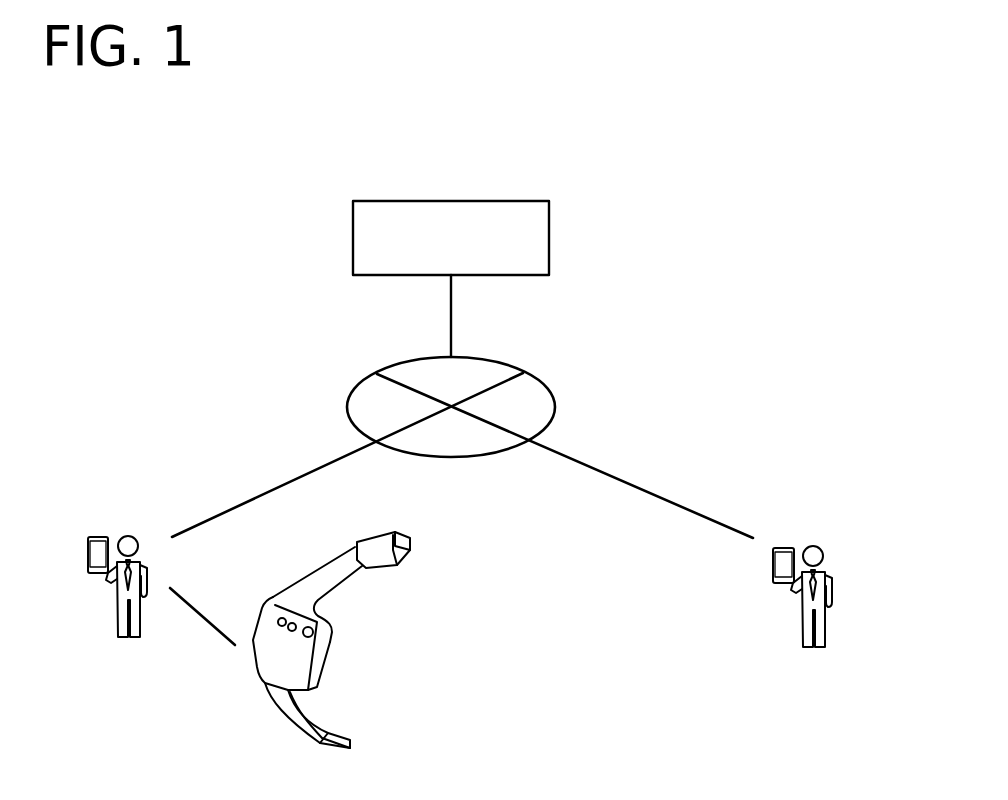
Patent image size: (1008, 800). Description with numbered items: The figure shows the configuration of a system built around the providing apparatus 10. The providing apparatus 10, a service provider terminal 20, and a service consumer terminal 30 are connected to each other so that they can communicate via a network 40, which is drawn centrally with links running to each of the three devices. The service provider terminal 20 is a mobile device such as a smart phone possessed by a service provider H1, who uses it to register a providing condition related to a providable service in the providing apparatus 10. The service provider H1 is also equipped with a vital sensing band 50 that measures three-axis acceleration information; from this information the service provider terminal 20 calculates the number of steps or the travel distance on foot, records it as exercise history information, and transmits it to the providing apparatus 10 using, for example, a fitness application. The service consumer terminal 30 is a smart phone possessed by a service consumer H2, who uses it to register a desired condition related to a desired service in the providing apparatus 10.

The providing apparatus 10 is at (549, 235).
The service provider terminal 20 is at (97, 535).
The service consumer terminal 30 is at (780, 546).
The network 40 is at (555, 407).
The vital sensing band 50 is at (330, 663).
The service provider H1 is at (117, 612).
The service consumer H2 is at (828, 615).